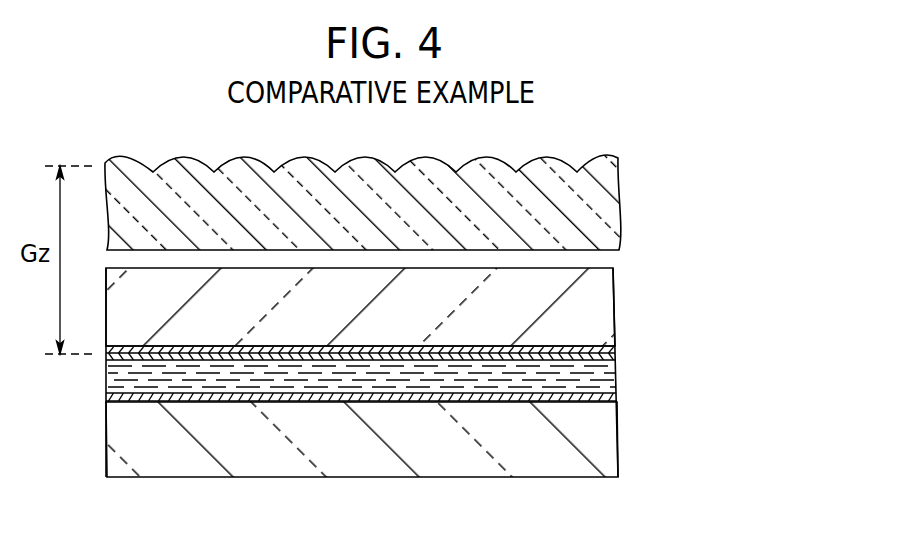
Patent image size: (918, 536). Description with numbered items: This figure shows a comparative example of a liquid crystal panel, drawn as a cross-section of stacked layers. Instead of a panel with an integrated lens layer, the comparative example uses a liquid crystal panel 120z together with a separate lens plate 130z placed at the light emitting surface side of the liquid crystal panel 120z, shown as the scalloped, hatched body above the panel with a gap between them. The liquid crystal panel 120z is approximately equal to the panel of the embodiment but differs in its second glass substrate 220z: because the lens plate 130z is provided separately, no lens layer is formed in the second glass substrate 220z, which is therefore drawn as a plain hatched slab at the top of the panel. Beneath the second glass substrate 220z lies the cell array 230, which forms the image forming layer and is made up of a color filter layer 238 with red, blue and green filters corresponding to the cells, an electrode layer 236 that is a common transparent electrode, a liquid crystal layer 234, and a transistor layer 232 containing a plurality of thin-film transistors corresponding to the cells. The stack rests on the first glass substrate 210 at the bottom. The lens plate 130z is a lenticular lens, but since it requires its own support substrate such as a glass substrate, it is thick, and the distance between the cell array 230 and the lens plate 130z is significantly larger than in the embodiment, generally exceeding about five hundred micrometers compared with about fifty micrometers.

The lens plate 130z is at (603, 181).
The liquid crystal panel 120z is at (480, 377).
The second glass substrate 220z is at (612, 298).
The cell array 230 is at (442, 390).
The color filter layer 238 is at (613, 348).
The electrode layer 236 is at (615, 357).
The liquid crystal layer 234 is at (617, 385).
The transistor layer 232 is at (615, 393).
The first glass substrate 210 is at (602, 460).